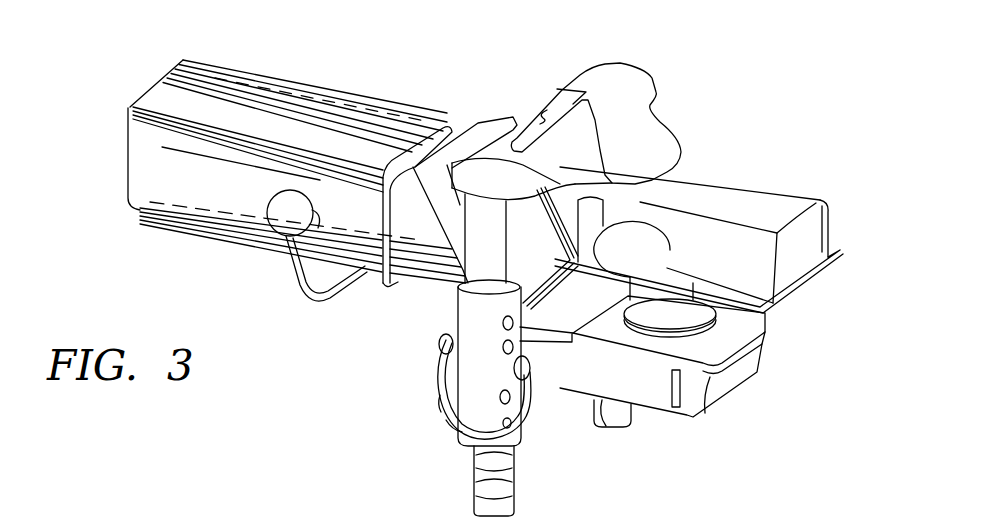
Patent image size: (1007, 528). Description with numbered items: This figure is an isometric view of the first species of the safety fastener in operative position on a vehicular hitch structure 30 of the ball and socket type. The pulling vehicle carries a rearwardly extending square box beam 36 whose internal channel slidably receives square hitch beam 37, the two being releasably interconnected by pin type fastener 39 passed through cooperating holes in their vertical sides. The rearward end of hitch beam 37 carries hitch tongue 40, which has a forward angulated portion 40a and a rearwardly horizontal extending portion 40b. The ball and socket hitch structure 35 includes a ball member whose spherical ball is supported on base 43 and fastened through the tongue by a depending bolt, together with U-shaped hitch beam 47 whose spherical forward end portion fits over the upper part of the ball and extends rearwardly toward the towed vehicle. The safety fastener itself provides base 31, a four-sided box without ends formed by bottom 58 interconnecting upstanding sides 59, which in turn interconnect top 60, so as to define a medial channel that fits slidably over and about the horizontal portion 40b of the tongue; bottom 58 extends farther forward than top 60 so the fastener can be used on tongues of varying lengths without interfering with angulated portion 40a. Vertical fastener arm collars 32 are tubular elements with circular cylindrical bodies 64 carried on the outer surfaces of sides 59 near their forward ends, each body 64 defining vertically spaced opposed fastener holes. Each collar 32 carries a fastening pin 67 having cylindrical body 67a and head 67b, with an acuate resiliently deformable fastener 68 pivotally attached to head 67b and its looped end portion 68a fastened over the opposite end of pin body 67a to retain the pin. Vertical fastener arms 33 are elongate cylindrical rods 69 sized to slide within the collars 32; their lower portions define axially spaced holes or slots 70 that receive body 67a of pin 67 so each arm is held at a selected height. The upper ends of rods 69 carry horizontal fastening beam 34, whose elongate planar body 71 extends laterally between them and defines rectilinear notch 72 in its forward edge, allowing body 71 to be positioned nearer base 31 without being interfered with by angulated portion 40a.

The vehicular hitch structure 30 is at (357, 94).
The base 31 is at (675, 404).
The vertical fastener arm collar 32 is at (567, 192).
The vertical fastener arm 33 is at (601, 181).
The horizontal fastening beam 34 is at (649, 92).
The ball and socket hitch structure 35 is at (722, 267).
The square box beam 36 is at (264, 107).
The square hitch beam 37 is at (446, 128).
The pin type fastener 39 is at (285, 214).
The hitch tongue 40 is at (433, 203).
The forward angulated portion 40a is at (518, 112).
The rearwardly horizontal extending portion 40b is at (710, 378).
The base 43 is at (660, 308).
The U-shaped hitch beam 47 is at (782, 213).
The bottom 58 is at (728, 398).
The side 59 is at (612, 382).
The top 60 is at (762, 313).
The cylindrical body 64 is at (678, 195).
The fastening pin 67 is at (432, 355).
The cylindrical body 67a is at (443, 424).
The head 67b is at (531, 364).
The acuate resiliently deformable fastener 68 is at (437, 404).
The looped end portion 68a is at (436, 343).
The rod 69 is at (514, 466).
The hole or slot 70 is at (490, 489).
The planar body 71 is at (584, 78).
The rectilinear notch 72 is at (595, 89).